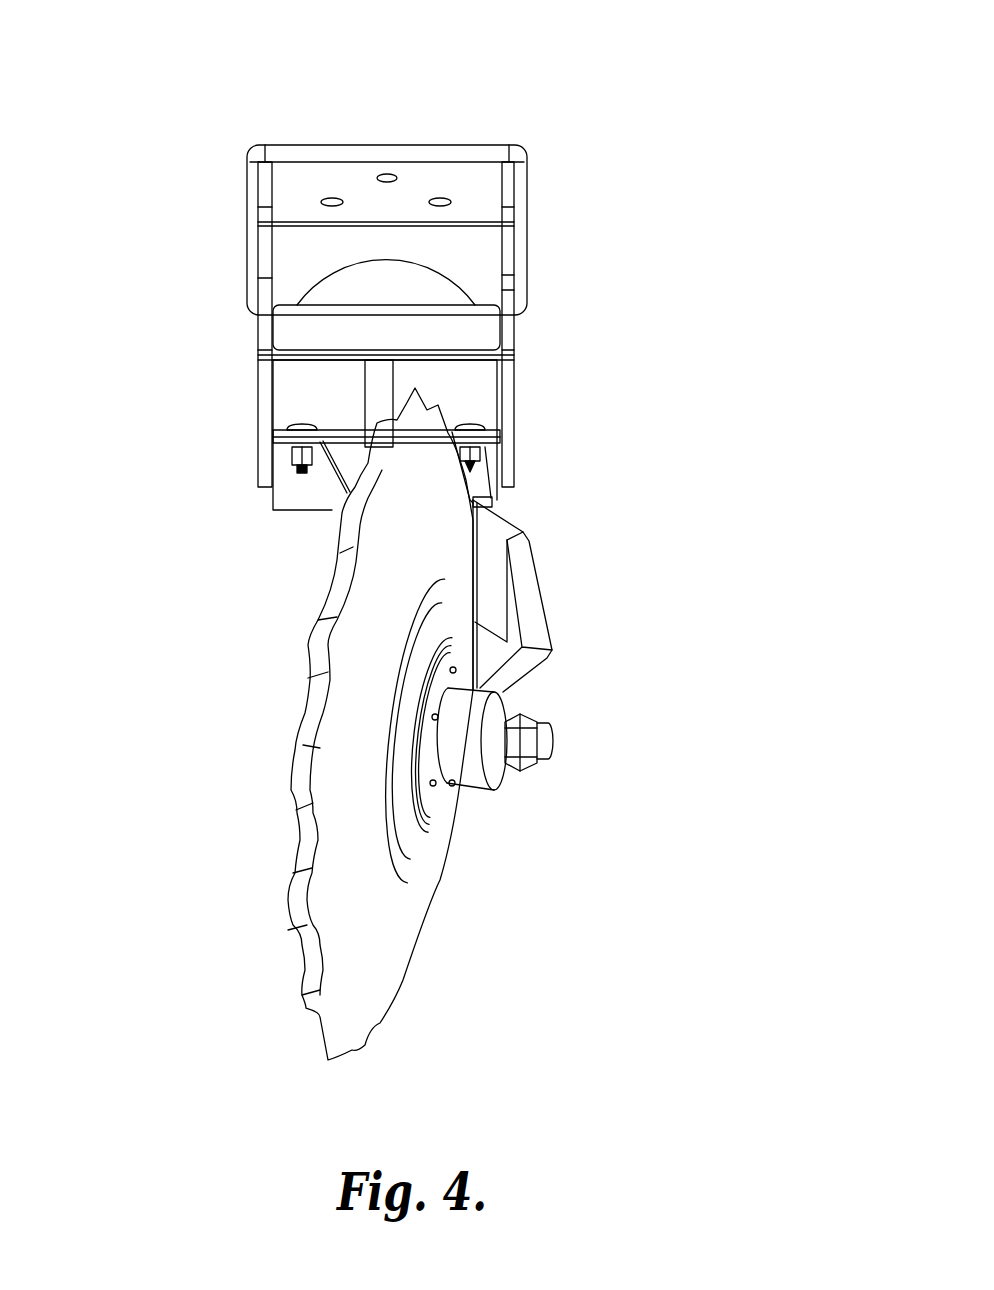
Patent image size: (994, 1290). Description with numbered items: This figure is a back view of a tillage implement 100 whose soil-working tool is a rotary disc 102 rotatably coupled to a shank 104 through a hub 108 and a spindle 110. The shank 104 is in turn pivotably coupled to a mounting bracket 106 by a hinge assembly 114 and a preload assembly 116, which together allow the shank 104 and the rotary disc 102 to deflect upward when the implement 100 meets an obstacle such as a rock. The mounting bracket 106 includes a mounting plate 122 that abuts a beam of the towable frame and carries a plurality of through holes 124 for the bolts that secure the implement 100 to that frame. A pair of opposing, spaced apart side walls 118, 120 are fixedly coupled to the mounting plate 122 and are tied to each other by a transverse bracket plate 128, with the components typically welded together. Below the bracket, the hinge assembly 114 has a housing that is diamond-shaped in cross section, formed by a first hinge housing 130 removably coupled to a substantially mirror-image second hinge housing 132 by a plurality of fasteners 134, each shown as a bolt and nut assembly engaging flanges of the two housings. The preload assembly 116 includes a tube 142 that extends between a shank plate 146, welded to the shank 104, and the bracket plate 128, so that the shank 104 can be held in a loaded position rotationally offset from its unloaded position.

The tillage implement 100 is at (187, 100).
The rotary disc 102 is at (335, 893).
The shank 104 is at (528, 575).
The mounting bracket 106 is at (482, 170).
The hub 108 is at (462, 765).
The spindle 110 is at (540, 740).
The hinge assembly 114 is at (553, 395).
The preload assembly 116 is at (306, 498).
The side wall 118 is at (505, 248).
The side wall 120 is at (262, 290).
The mounting plate 122 is at (300, 175).
The through holes 124 is at (334, 198).
The bracket plate 128 is at (325, 332).
The first hinge housing 130 is at (480, 372).
The second hinge housing 132 is at (485, 472).
The fasteners 134 is at (300, 428).
The tube 142 is at (375, 378).
The shank plate 146 is at (345, 463).